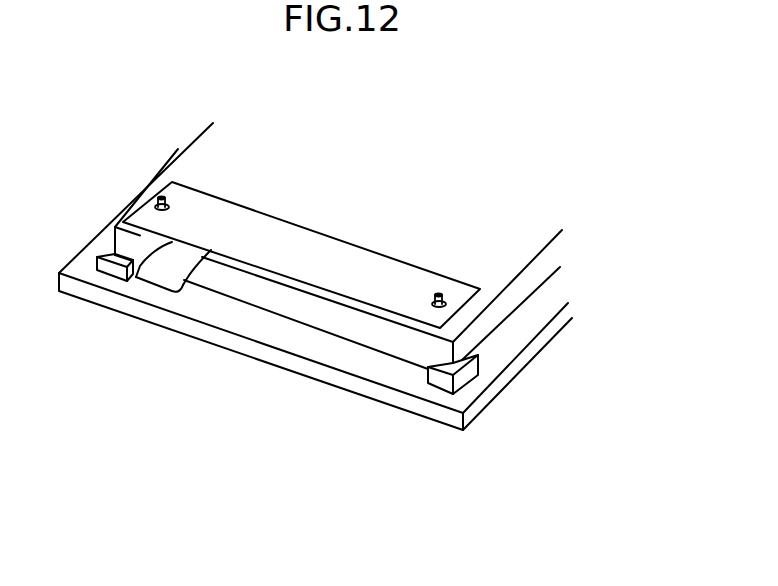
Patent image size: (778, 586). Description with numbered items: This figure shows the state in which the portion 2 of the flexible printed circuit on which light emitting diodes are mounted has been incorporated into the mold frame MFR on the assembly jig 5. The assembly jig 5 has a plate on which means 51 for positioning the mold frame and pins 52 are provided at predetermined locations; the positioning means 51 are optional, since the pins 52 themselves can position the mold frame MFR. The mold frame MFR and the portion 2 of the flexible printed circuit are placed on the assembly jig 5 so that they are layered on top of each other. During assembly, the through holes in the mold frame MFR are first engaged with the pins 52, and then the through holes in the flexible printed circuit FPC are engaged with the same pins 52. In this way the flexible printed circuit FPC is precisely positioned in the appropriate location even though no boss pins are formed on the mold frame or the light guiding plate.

The portion of the flexible printed circuit on which light emitting diodes are mount 2 is at (314, 258).
The assembly jig 5 is at (247, 362).
The means for positioning the mold frame 51 is at (465, 374).
The pins 52 is at (447, 301).
The flexible printed circuit FPC is at (157, 270).
The mold frame MFR is at (367, 333).